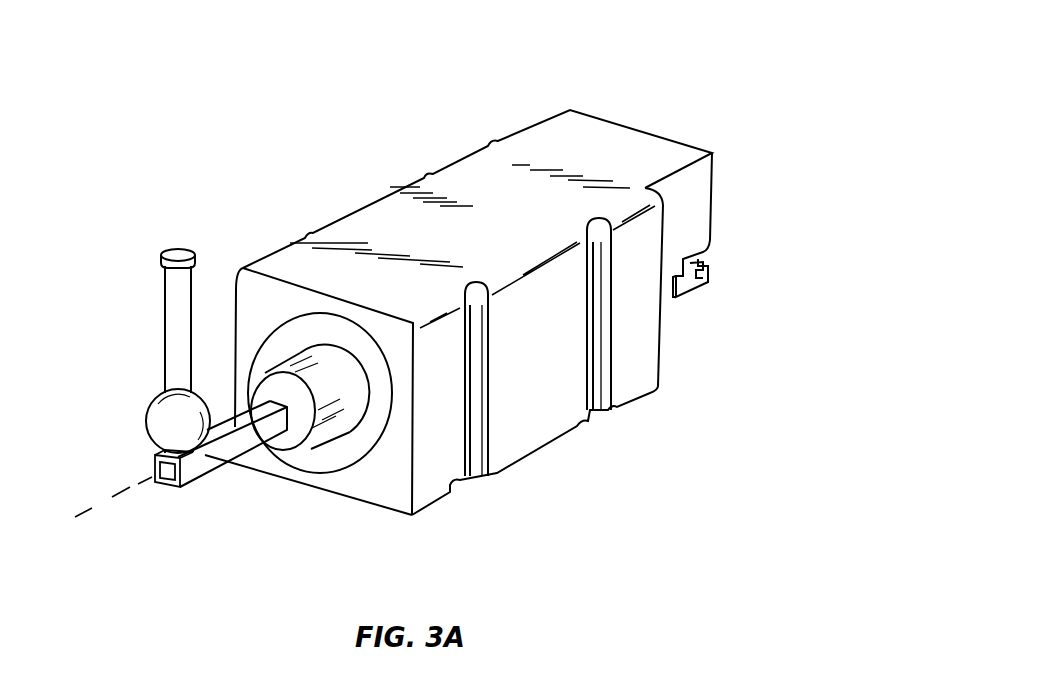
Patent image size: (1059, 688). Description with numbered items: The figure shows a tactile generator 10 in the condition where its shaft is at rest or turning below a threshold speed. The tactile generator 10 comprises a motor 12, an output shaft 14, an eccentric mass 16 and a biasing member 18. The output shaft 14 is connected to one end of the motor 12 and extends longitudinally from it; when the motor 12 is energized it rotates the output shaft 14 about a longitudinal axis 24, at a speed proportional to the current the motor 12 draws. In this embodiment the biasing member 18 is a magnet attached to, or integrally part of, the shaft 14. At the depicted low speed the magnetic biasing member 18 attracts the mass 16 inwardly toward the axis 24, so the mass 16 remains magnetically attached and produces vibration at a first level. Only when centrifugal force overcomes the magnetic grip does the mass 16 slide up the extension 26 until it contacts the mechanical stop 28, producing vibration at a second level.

The tactile generator 10 is at (663, 78).
The motor 12 is at (497, 187).
The output shaft 14 is at (218, 460).
The eccentric mass 16 is at (175, 430).
The biasing member 18 is at (207, 450).
The longitudinal axis 24 is at (137, 485).
The extension 26 is at (178, 300).
The mechanical stop 28 is at (176, 252).